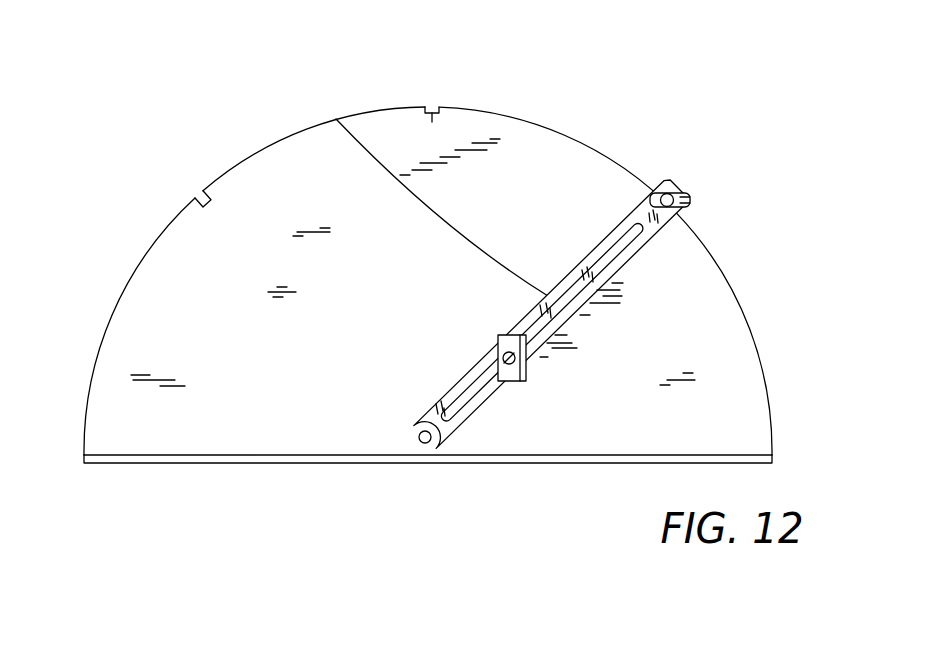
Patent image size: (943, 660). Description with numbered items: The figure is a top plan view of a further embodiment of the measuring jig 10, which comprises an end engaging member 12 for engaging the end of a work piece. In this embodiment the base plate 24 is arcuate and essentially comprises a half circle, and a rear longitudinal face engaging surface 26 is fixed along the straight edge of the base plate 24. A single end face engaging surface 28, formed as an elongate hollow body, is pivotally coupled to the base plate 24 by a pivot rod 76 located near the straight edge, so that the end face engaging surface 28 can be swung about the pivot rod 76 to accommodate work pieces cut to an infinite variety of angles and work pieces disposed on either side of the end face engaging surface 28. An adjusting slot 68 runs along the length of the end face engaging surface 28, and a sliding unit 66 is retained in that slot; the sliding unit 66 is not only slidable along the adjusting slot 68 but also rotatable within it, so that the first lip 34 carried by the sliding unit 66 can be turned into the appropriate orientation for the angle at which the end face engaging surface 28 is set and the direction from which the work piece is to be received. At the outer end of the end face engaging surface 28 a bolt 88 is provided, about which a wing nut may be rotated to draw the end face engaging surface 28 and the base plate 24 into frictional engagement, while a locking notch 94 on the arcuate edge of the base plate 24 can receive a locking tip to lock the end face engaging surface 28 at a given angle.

The measuring jig 10 is at (218, 116).
The end engaging member 12 is at (110, 266).
The base plate 24 is at (348, 364).
The rear longitudinal face engaging surface 26 is at (247, 466).
The end face engaging surface 28 is at (598, 245).
The first lip 34 is at (527, 363).
The sliding unit 66 is at (522, 383).
The adjusting slot 68 is at (432, 187).
The pivot rod 76 is at (424, 443).
The bolt 88 is at (673, 193).
The locking notch 94 is at (200, 195).